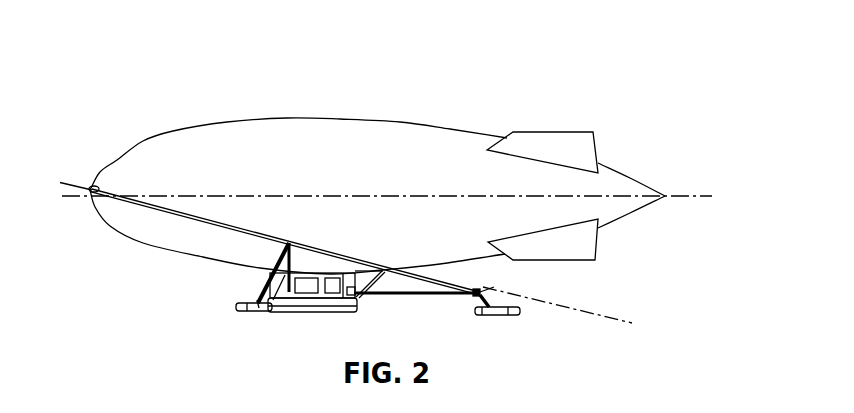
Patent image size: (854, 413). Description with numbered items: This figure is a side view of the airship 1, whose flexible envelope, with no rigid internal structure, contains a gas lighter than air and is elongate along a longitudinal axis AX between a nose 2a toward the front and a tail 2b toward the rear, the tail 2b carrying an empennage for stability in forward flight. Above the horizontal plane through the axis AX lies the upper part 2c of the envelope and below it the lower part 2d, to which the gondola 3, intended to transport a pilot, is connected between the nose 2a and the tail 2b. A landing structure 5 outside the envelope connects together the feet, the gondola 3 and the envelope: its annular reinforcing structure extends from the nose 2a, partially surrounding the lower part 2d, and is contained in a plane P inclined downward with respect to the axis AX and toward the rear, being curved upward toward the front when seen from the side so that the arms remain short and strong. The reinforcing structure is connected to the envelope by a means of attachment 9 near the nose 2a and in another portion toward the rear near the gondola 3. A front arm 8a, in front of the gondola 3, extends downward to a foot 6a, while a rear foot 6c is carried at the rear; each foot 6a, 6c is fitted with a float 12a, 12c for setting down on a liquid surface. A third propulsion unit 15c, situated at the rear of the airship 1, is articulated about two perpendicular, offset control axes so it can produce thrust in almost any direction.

The airship 1 is at (376, 176).
The nose 2a is at (117, 168).
The tail 2b is at (620, 180).
The upper part 2c is at (334, 119).
The lower part 2d is at (205, 250).
The gondola 3 is at (313, 300).
The landing structure 5 is at (341, 310).
The foot 6a is at (259, 308).
The foot 6c is at (507, 315).
The front arm 8a is at (268, 281).
The means of attachment 9 is at (88, 181).
The float 12a is at (240, 309).
The float 12c is at (493, 315).
The third propulsion unit 15c is at (490, 287).
The longitudinal axis AX is at (688, 190).
The plane P is at (616, 318).